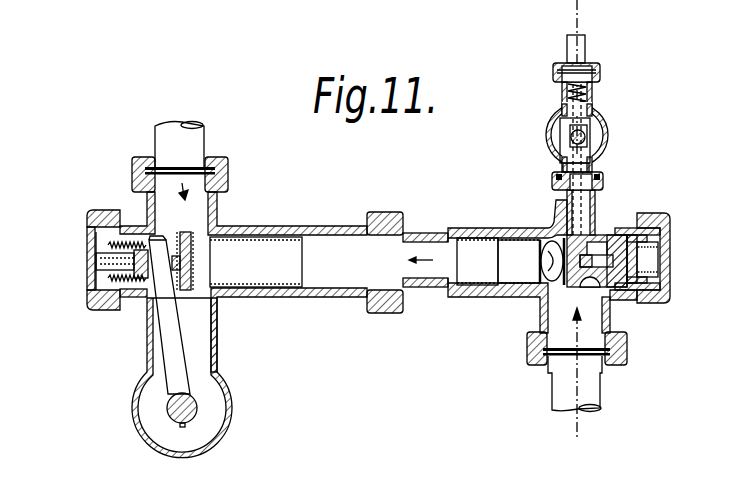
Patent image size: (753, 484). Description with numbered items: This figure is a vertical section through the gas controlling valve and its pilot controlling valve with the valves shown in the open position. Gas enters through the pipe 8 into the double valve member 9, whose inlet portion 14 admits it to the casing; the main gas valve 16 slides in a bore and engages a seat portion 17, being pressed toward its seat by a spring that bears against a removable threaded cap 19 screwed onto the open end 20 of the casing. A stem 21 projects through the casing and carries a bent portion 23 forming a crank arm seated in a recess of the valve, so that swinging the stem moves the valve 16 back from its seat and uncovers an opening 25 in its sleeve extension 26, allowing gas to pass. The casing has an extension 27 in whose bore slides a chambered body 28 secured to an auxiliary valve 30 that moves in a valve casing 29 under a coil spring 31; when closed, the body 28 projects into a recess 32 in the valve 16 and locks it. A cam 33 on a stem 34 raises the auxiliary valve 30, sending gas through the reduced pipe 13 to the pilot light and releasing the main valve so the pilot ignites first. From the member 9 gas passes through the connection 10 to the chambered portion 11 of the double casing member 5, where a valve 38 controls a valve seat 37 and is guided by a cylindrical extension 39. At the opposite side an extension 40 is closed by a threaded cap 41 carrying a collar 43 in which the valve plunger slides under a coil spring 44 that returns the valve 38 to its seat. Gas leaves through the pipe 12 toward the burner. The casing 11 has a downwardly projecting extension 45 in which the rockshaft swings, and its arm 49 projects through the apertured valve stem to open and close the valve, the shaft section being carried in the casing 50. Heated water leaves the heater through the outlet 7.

The double casing member 5 is at (227, 282).
The outlet 7 is at (575, 387).
The pipe 8 is at (553, 390).
The double valve member 9 is at (466, 230).
The connection 10 is at (431, 290).
The chambered portion 11 is at (358, 222).
The pipe 12 is at (201, 137).
The reduced pipe 13 is at (583, 41).
The inlet portion 14 is at (545, 297).
The valve 16 is at (584, 288).
The seat portion 17 is at (516, 228).
The removable threaded cap 19 is at (669, 223).
The open end 20 is at (645, 284).
The stem 21 is at (627, 233).
The bent portion 23 is at (610, 296).
The opening 25 is at (522, 297).
The sleeve extension 26 is at (546, 273).
The extension 27 is at (602, 186).
The body 28 is at (553, 193).
The valve casing 29 is at (593, 112).
The valve 30 is at (562, 129).
The coil spring 31 is at (559, 99).
The recess 32 is at (590, 236).
The cam 33 is at (587, 131).
The stem 34 is at (586, 142).
The valve seat 37 is at (200, 232).
The valve 38 is at (194, 283).
The cylindrical extension 39 is at (280, 240).
The extension 40 is at (128, 298).
The threaded cap 41 is at (87, 217).
The collar 43 is at (89, 291).
The coil spring 44 is at (144, 286).
The downwardly projecting extension 45 is at (232, 402).
The arm 49 is at (182, 284).
The casing 50 is at (183, 199).